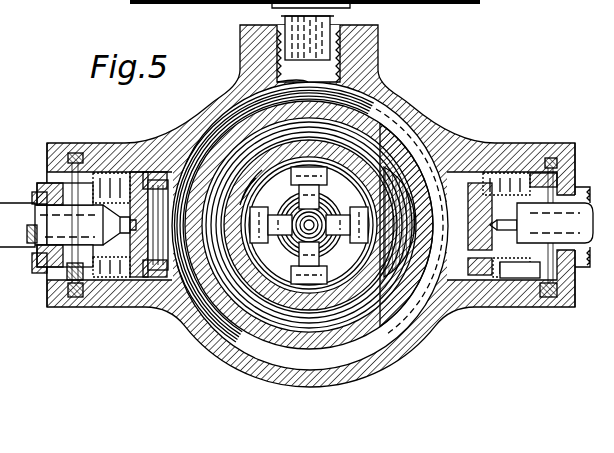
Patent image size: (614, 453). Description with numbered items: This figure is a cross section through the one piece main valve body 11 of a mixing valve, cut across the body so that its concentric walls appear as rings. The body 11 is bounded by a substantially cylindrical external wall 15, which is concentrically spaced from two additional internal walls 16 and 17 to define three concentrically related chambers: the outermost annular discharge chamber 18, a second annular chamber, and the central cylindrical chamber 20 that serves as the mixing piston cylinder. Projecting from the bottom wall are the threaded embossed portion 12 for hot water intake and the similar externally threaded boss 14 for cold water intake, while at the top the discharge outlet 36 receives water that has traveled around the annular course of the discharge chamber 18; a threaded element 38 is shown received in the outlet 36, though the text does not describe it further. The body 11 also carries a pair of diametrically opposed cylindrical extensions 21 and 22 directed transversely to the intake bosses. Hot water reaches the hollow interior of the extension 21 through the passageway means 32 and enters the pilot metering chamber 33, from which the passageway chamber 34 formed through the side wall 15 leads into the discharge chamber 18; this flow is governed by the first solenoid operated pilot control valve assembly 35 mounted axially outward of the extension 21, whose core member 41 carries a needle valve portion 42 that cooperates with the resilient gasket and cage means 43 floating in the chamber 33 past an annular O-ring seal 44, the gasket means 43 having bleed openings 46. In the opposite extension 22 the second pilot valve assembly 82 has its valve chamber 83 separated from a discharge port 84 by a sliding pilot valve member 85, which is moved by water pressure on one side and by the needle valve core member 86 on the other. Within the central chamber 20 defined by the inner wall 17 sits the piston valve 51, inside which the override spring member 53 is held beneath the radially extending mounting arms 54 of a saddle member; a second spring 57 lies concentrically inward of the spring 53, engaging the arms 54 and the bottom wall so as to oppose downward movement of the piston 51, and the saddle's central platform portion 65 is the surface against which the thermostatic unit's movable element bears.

The main valve body 11 is at (398, 358).
The threaded embossed portion 12 is at (147, 305).
The externally threaded boss 14 is at (450, 310).
The cylindrical external wall 15 is at (405, 104).
The internal wall 16 is at (224, 342).
The internal wall 17 is at (318, 152).
The annular discharge chamber 18 is at (252, 350).
The central cylindrical chamber 20 is at (283, 185).
The cylindrical extension 21 is at (86, 143).
The cylindrical extension 22 is at (530, 144).
The passageway means 32 is at (178, 172).
The pilot metering chamber 33 is at (42, 262).
The passageway chamber 34 is at (150, 239).
The pilot control valve assembly 35 is at (33, 143).
The discharge outlet 36 is at (276, 70).
The plug 38 is at (282, 18).
The core member 41 is at (18, 225).
The needle valve portion 42 is at (82, 223).
The resilient gasket and cage means 43 is at (157, 144).
The annular O-ring seal 44 is at (100, 302).
The bleed openings 46 is at (72, 302).
The piston valve 51 is at (287, 300).
The override spring member 53 is at (330, 290).
The mounting arms 54 is at (258, 178).
The second spring 57 is at (327, 202).
The central platform portion 65 is at (196, 333).
The second pilot valve assembly 82 is at (595, 162).
The valve chamber 83 is at (507, 302).
The discharge port 84 is at (501, 283).
The sliding pilot valve member 85 is at (470, 186).
The needle valve core member 86 is at (585, 205).